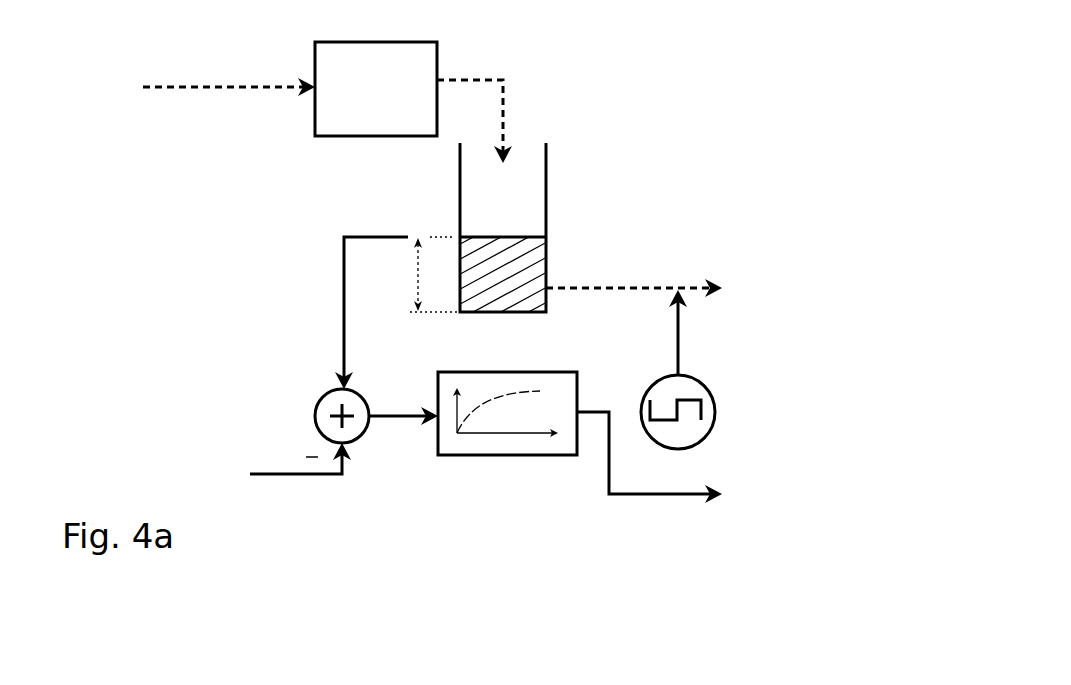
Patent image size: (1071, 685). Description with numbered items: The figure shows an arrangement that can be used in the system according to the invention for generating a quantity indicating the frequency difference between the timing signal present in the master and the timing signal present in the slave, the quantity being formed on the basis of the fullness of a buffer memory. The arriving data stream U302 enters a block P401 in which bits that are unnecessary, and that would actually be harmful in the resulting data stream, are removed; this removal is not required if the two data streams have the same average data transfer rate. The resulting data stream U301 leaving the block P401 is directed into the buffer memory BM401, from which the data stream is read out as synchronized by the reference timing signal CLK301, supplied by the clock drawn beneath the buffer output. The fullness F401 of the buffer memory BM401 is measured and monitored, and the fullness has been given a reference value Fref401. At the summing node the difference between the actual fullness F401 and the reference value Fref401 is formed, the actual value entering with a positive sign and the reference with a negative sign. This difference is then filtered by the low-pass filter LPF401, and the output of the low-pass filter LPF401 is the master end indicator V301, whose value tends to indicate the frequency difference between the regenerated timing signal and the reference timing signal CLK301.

The arriving data stream U302 is at (256, 83).
The bit removal block P401 is at (391, 40).
The resulting data stream U301 is at (498, 77).
The buffer memory BM401 is at (458, 203).
The fullness of the buffer memory F401 is at (340, 298).
The reference value of the fullness Fref401 is at (307, 478).
The low-pass filter LPF401 is at (515, 459).
The master end indicator V301 is at (667, 498).
The reference timing signal CLK301 is at (683, 318).